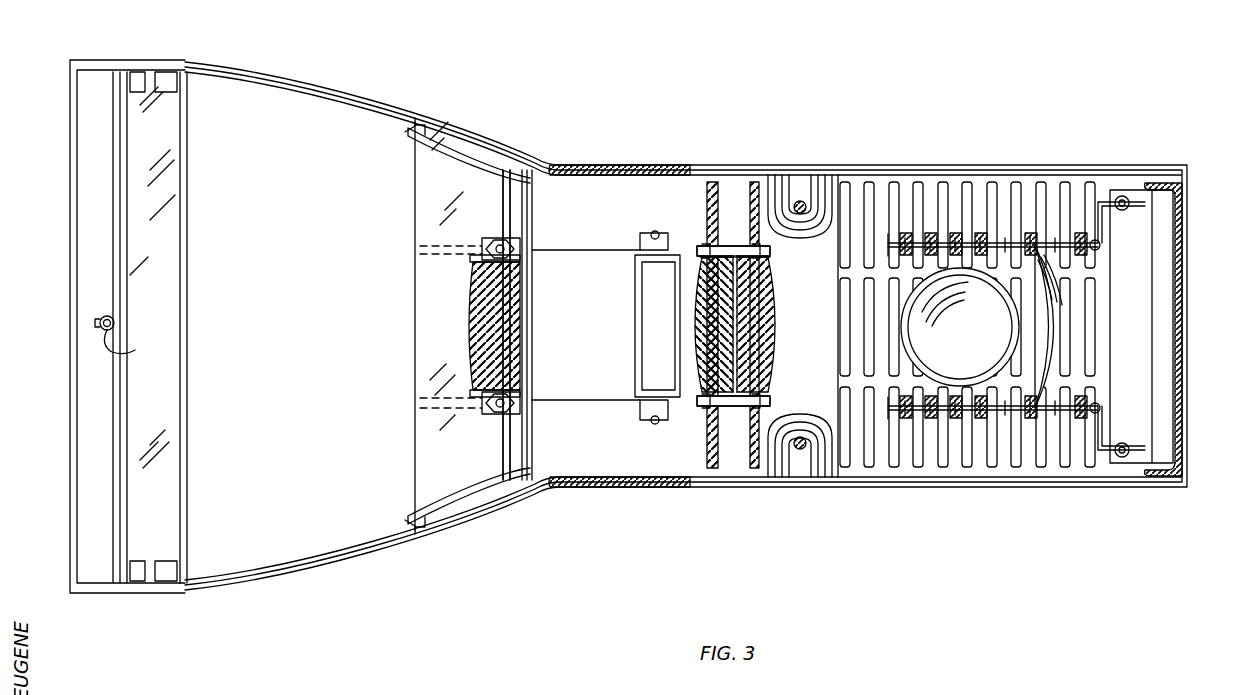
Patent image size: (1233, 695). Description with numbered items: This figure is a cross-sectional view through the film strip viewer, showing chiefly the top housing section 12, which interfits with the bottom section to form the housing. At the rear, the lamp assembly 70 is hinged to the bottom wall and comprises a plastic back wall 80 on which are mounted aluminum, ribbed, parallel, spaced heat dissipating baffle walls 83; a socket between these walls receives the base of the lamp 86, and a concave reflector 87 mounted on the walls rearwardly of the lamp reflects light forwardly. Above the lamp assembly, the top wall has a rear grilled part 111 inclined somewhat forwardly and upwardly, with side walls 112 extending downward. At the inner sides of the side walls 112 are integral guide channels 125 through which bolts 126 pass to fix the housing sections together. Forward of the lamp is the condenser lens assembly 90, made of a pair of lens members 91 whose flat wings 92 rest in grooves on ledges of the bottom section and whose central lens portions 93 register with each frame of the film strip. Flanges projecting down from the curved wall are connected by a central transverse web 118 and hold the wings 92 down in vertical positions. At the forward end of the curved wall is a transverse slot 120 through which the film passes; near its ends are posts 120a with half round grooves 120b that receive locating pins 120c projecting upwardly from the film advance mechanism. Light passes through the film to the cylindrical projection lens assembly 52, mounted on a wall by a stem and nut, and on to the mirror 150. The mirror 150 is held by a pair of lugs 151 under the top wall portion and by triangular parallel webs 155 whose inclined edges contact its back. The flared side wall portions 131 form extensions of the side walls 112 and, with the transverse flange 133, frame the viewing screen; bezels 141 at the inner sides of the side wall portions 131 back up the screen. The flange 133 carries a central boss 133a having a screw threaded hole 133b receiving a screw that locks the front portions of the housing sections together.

The top housing section 12 is at (809, 143).
The cylindrical projection lens assembly 52 is at (464, 331).
The lamp assembly 70 is at (1194, 281).
The back wall 80 is at (1182, 348).
The heat dissipating baffle walls 83 is at (945, 243).
The lamp 86 is at (1010, 292).
The concave reflector 87 is at (1068, 320).
The condenser lens assembly 90 is at (785, 314).
The lens members 91 is at (758, 432).
The flat wings 92 is at (748, 432).
The central lens portions 93 is at (760, 340).
The rear grilled part 111 is at (1040, 232).
The side walls 112 is at (1037, 152).
The central transverse web 118 is at (770, 252).
The transverse slot 120 is at (650, 280).
The posts 120a is at (643, 238).
The half round grooves 120b is at (655, 231).
The locating pins 120c is at (660, 232).
The guide channels 125 is at (832, 190).
The bolts 126 is at (803, 203).
The side wall portions 131 is at (276, 66).
The transverse flange 133 is at (90, 196).
The central boss 133a is at (144, 346).
The screw threaded hole 133b is at (100, 318).
The bezels 141 is at (155, 212).
The mirror 150 is at (436, 174).
The lugs 151 is at (408, 128).
The triangular parallel webs 155 is at (440, 247).